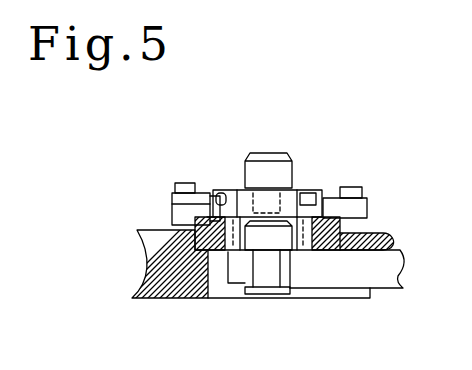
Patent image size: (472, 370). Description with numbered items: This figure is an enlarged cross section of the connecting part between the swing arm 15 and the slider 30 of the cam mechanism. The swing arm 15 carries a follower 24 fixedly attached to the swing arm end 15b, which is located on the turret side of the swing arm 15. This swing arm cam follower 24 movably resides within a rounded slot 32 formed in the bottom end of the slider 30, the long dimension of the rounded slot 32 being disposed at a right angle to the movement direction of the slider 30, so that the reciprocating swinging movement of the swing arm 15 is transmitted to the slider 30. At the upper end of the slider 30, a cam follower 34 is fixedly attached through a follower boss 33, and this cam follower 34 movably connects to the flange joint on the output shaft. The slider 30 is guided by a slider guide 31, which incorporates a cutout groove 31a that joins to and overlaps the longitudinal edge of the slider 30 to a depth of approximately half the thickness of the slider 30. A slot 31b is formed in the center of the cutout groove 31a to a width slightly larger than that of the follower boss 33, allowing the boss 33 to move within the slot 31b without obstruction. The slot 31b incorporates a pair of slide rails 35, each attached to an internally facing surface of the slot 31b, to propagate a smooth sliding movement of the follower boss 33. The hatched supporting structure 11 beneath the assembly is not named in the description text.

The base 11 is at (150, 280).
The swing arm 15 is at (380, 277).
The swing arm end 15b is at (230, 268).
The follower 24 is at (268, 238).
The slider 30 is at (368, 222).
The slider guide 31 is at (338, 198).
The cutout groove 31a is at (200, 221).
The slot 31b is at (218, 192).
The rounded slot 32 is at (295, 223).
The follower boss 33 is at (243, 192).
The cam follower 34 is at (270, 168).
The slide rails 35 is at (327, 192).